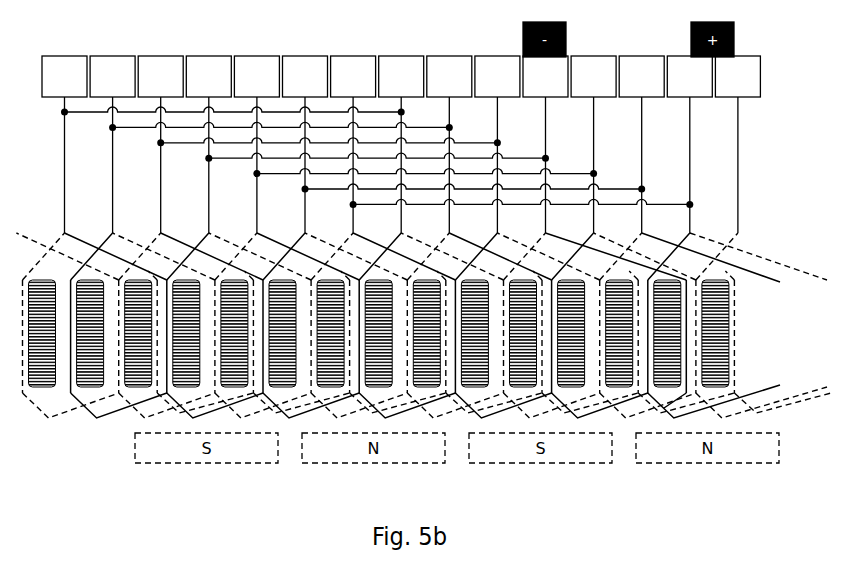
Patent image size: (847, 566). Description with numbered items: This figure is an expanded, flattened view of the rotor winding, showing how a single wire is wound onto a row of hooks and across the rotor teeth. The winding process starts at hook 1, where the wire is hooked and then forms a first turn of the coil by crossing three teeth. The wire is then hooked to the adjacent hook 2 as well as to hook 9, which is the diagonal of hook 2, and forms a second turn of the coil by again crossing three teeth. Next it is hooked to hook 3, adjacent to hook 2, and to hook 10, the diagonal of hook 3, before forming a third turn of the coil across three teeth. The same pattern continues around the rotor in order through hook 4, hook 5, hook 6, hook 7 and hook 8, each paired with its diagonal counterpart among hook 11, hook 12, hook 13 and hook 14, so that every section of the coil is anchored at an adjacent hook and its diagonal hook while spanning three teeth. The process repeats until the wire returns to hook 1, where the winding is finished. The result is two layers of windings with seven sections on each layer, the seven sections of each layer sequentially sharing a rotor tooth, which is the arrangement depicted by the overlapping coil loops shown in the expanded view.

The hook 1 is at (401, 76).
The hook 2 is at (689, 76).
The hook 3 is at (641, 76).
The hook 4 is at (593, 76).
The hook 5 is at (545, 76).
The hook 6 is at (497, 76).
The hook 7 is at (449, 76).
The hook 8 is at (401, 76).
The hook 9 is at (353, 76).
The hook 10 is at (305, 76).
The hook 11 is at (256, 76).
The hook 12 is at (208, 76).
The hook 13 is at (160, 76).
The hook 14 is at (112, 76).